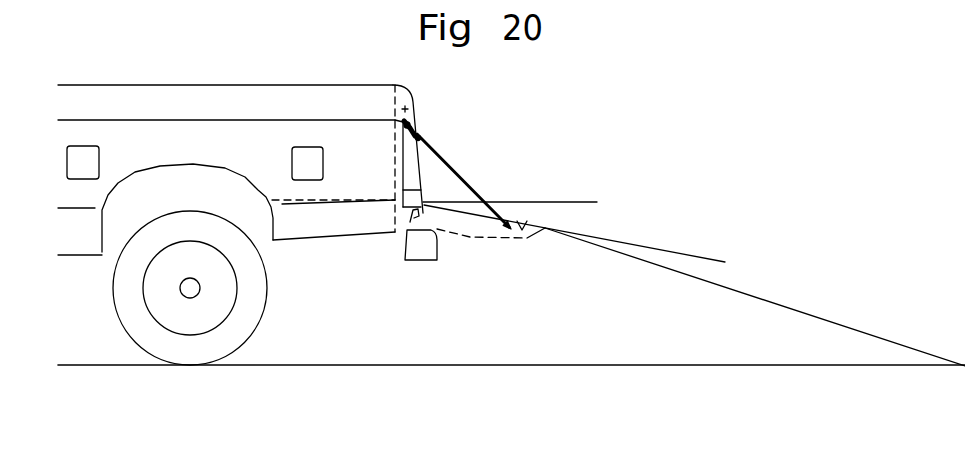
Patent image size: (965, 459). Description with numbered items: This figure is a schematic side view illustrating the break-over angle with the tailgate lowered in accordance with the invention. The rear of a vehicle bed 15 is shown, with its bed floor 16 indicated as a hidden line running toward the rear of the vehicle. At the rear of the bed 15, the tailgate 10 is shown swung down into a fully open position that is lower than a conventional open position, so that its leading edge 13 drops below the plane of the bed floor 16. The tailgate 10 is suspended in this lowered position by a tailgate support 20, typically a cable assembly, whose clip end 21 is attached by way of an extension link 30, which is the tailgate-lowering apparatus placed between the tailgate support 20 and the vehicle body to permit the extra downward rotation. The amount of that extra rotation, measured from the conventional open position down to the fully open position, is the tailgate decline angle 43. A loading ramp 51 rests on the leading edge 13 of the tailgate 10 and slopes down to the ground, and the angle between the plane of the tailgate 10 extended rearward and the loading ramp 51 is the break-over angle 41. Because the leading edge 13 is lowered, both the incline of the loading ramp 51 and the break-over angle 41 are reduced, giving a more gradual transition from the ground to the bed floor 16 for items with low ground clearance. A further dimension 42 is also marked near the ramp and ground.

The bed 15 is at (247, 209).
The bed floor 16 is at (333, 177).
The extension link 30 is at (459, 103).
The clip end 21 is at (474, 121).
The tailgate support 20 is at (483, 182).
The tailgate 10 is at (498, 256).
The leading edge 13 is at (600, 273).
The loading ramp 51 is at (694, 285).
The tailgate decline angle 43 is at (590, 172).
The break-over angle 41 is at (727, 216).
The height above ground 42 is at (792, 313).